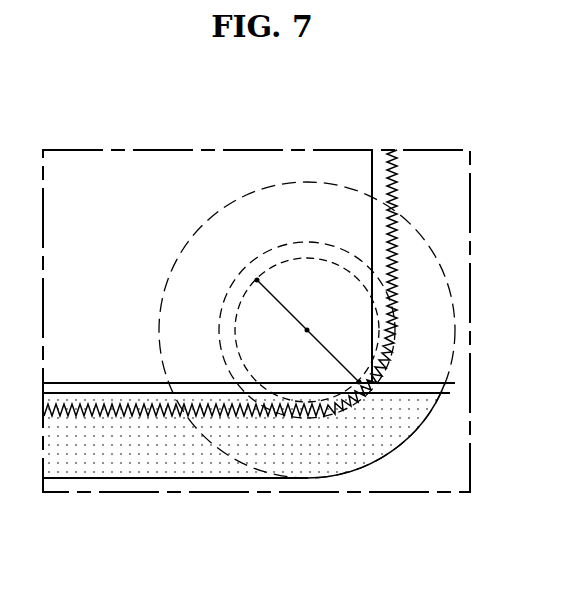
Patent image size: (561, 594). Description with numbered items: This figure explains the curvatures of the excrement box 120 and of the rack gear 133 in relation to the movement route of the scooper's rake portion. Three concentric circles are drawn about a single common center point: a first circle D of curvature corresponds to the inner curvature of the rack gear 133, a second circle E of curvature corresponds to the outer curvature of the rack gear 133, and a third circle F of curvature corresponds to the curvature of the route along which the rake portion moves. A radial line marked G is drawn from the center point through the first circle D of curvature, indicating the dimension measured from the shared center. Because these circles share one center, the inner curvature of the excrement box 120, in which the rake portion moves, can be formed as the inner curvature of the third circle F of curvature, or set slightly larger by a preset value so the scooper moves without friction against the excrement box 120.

The excrement box 120 is at (178, 478).
The rack gear 133 is at (103, 417).
The first circle of curvature D is at (301, 255).
The second circle of curvature E is at (277, 247).
The third circle of curvature F is at (243, 193).
The radius line G is at (308, 331).